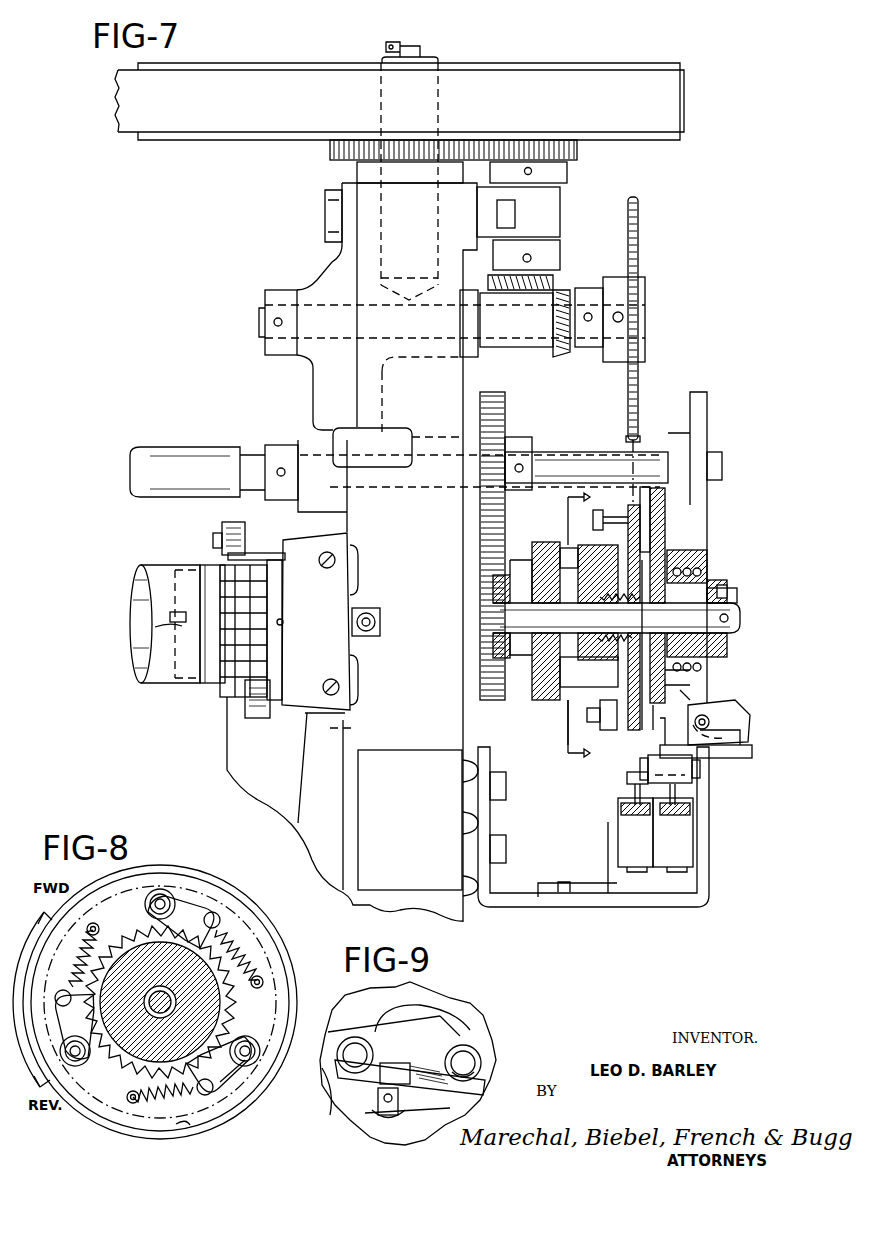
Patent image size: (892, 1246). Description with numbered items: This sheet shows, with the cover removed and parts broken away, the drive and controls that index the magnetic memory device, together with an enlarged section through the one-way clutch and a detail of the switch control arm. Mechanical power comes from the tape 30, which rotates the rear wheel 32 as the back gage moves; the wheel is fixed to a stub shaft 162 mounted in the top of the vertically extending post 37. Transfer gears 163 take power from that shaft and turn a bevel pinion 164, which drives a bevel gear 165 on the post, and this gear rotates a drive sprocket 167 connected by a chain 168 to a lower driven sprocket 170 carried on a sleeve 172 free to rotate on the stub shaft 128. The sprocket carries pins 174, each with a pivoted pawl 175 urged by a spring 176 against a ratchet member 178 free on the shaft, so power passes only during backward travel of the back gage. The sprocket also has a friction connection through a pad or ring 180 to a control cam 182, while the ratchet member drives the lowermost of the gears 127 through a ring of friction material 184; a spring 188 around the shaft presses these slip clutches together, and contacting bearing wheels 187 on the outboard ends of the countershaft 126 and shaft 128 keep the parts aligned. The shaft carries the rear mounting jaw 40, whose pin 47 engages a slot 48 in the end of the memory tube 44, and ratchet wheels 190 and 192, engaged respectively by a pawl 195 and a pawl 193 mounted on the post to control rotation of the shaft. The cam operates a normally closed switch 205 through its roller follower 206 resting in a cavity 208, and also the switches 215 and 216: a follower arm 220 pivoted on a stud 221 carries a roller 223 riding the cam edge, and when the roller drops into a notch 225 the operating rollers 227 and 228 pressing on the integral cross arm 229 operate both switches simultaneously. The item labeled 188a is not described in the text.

In FIG. 7, the tape 30 is at (135, 122).
In FIG. 7, the rear wheel 32 is at (252, 69).
In FIG. 7, the post 37 is at (318, 387).
In FIG. 7, the rear mounting jaw 40 is at (209, 688).
In FIG. 7, the tube 44 is at (136, 571).
In FIG. 7, the pin 47 is at (182, 627).
In FIG. 7, the slot 48 is at (162, 620).
In FIG. 7, the countershaft 126 is at (250, 449).
In FIG. 7, the gears 127 is at (478, 560).
In FIG. 7, the stub shaft 128 is at (741, 609).
In FIG. 7, the stub shaft 162 is at (426, 56).
In FIG. 7, the transfer gears 163 is at (506, 138).
In FIG. 7, the bevel pinion 164 is at (550, 277).
In FIG. 7, the bevel gear 165 is at (558, 350).
In FIG. 7, the drive sprocket 167 is at (641, 221).
In FIG. 7, the chain 168 is at (626, 438).
In FIG. 7, the driven sprocket 170 is at (628, 508).
In FIG. 8, the driven sprocket 170 is at (250, 1085).
In FIG. 7, the sleeve 172 is at (662, 645).
In FIG. 7, the pins 174 is at (604, 732).
In FIG. 8, the pins 174 is at (163, 890).
In FIG. 7, the pawl 175 is at (602, 740).
In FIG. 8, the pawl 175 is at (215, 912).
In FIG. 8, the spring 176 is at (248, 960).
In FIG. 7, the ratchet member 178 is at (565, 542).
In FIG. 8, the ratchet member 178 is at (232, 1003).
In FIG. 7, the pad or ring 180 is at (658, 560).
In FIG. 7, the control cam 182 is at (672, 509).
In FIG. 8, the control cam 182 is at (92, 1112).
In FIG. 9, the control cam 182 is at (452, 1001).
In FIG. 7, the ring of friction material 184 is at (550, 698).
In FIG. 7, the bearing wheels 187 is at (705, 558).
In FIG. 7, the spring 188 is at (607, 665).
In FIG. 7, the nut 188a is at (707, 571).
In FIG. 7, the ratchet wheel 190 is at (260, 644).
In FIG. 7, the ratchet wheel 192 is at (232, 700).
In FIG. 7, the pawl 193 is at (233, 522).
In FIG. 7, the pawl 195 is at (262, 718).
In FIG. 7, the switch 205 is at (733, 718).
In FIG. 7, the roller follower 206 is at (676, 690).
In FIG. 7, the cavity 208 is at (688, 733).
In FIG. 7, the switch 215 is at (623, 843).
In FIG. 7, the switch 216 is at (688, 833).
In FIG. 7, the follower arm 220 is at (700, 779).
In FIG. 9, the follower arm 220 is at (445, 1045).
In FIG. 9, the stud 221 is at (482, 1058).
In FIG. 9, the roller 223 is at (328, 1080).
In FIG. 8, the notch 225 is at (186, 1125).
In FIG. 9, the notch 225 is at (448, 1002).
In FIG. 7, the operating roller 227 is at (632, 797).
In FIG. 9, the operating roller 227 is at (404, 1115).
In FIG. 7, the operating roller 228 is at (672, 796).
In FIG. 7, the cross arm 229 is at (628, 776).
In FIG. 9, the cross arm 229 is at (398, 1072).